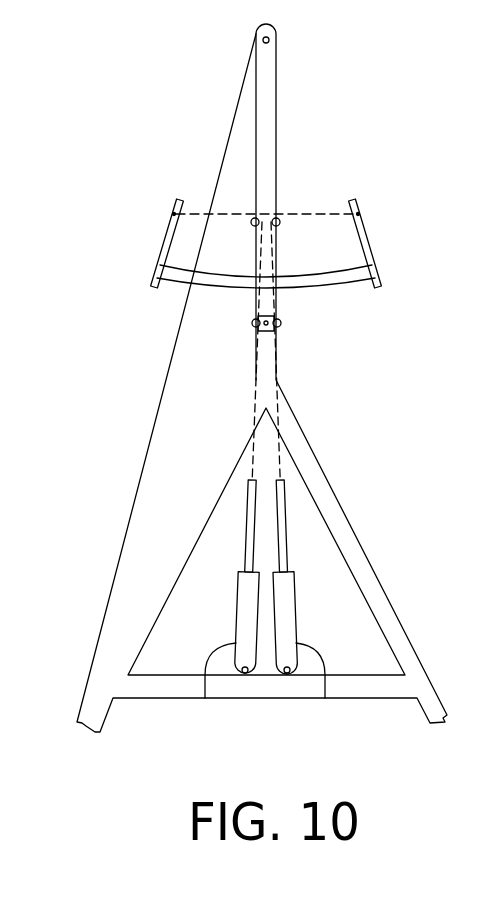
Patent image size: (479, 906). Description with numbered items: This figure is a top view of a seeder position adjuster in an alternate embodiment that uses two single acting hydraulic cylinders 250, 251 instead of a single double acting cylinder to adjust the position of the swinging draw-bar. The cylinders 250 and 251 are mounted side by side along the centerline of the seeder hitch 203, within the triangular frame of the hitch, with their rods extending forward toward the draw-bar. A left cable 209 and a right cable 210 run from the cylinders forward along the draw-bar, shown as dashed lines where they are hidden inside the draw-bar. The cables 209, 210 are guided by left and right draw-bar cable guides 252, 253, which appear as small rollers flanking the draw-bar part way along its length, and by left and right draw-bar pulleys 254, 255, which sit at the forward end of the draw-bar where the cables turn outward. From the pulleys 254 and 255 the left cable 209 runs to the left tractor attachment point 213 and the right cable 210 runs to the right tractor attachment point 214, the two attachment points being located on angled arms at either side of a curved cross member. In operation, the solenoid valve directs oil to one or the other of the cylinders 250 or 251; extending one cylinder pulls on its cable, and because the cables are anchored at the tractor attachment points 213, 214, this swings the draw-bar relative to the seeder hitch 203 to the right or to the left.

The seeder hitch 203 is at (380, 578).
The left cable 209 is at (213, 215).
The right cable 210 is at (319, 215).
The left tractor attachment point 213 is at (172, 213).
The right tractor attachment point 214 is at (360, 213).
The single acting cylinder 250 is at (205, 698).
The single acting cylinder 251 is at (325, 698).
The left draw-bar cable guide 252 is at (251, 323).
The right draw-bar cable guide 253 is at (282, 323).
The left draw-bar pulley 254 is at (250, 218).
The right draw-bar pulley 255 is at (281, 218).